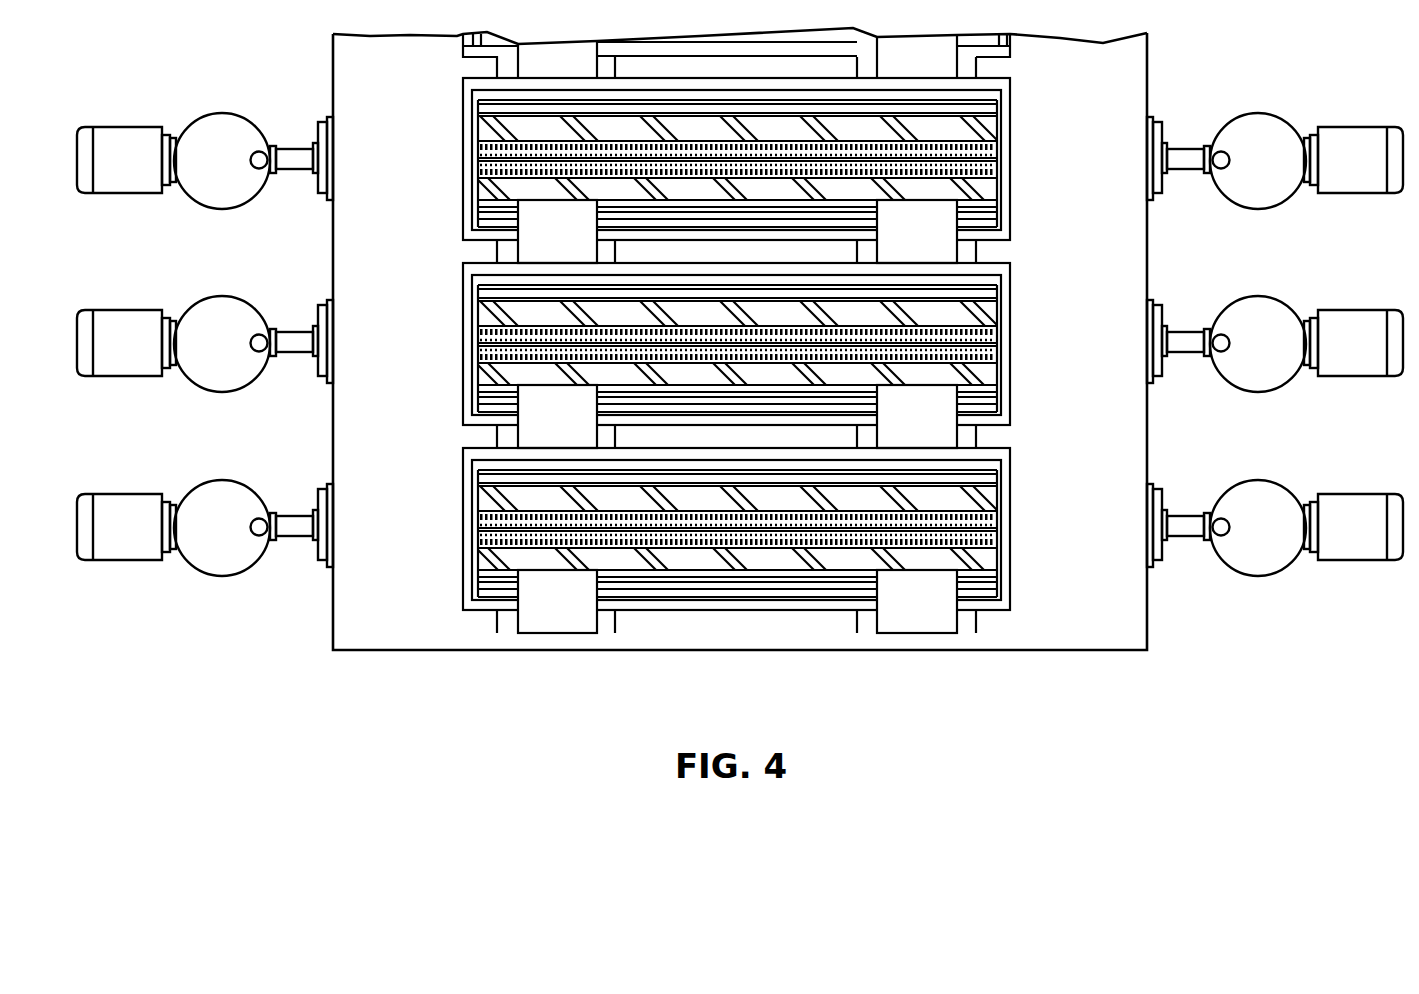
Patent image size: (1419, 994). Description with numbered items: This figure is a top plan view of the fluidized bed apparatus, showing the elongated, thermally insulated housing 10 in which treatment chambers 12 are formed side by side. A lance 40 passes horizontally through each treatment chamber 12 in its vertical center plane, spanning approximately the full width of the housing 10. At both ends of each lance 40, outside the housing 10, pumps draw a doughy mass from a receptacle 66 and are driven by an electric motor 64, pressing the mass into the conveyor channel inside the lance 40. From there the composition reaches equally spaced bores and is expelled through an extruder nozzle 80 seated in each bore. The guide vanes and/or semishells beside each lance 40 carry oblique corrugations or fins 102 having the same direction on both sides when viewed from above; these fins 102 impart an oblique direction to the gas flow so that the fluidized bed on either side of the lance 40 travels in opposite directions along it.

The housing 10 is at (1160, 56).
The treatment chamber 12 is at (1002, 85).
The lance 40 is at (987, 157).
The electric motor 64 is at (133, 127).
The receptacle 66 is at (220, 113).
The extruder nozzle 80 is at (998, 330).
The oblique corrugations or fins 102 is at (492, 502).